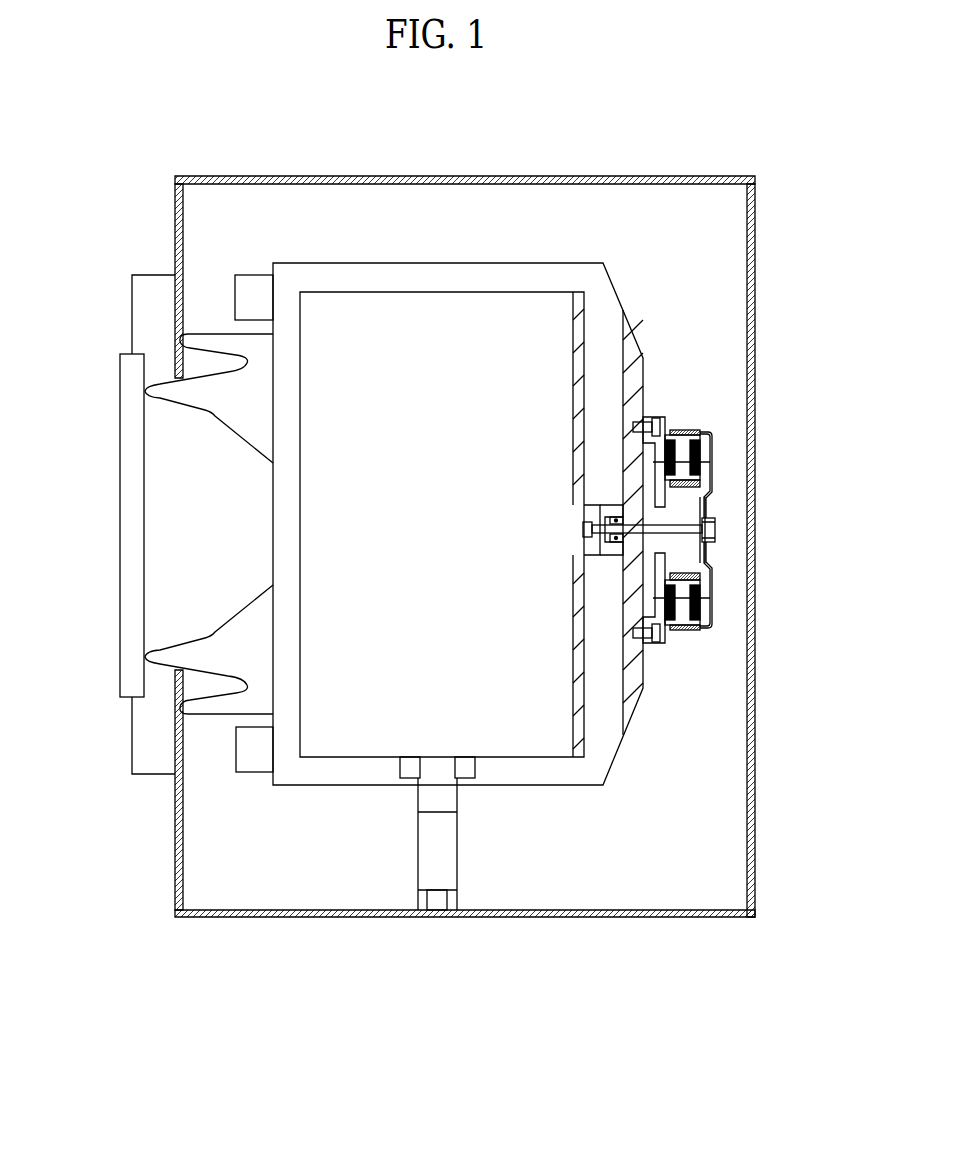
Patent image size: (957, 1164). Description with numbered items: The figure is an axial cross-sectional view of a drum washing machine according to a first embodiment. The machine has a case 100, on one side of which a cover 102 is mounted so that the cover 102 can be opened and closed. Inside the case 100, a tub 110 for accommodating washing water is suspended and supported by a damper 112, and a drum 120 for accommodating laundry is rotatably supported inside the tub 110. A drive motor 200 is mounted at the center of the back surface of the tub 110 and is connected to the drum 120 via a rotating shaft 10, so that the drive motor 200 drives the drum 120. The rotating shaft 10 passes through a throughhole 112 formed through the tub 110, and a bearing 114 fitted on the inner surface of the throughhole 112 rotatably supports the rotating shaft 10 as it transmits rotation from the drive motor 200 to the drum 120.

The case 100 is at (638, 913).
The cover 102 is at (125, 508).
The tub 110 is at (525, 775).
The damper 112 is at (422, 848).
The bearing 114 is at (612, 538).
The rotating shaft 10 is at (645, 523).
The drum 120 is at (580, 685).
The drive motor 200 is at (719, 436).